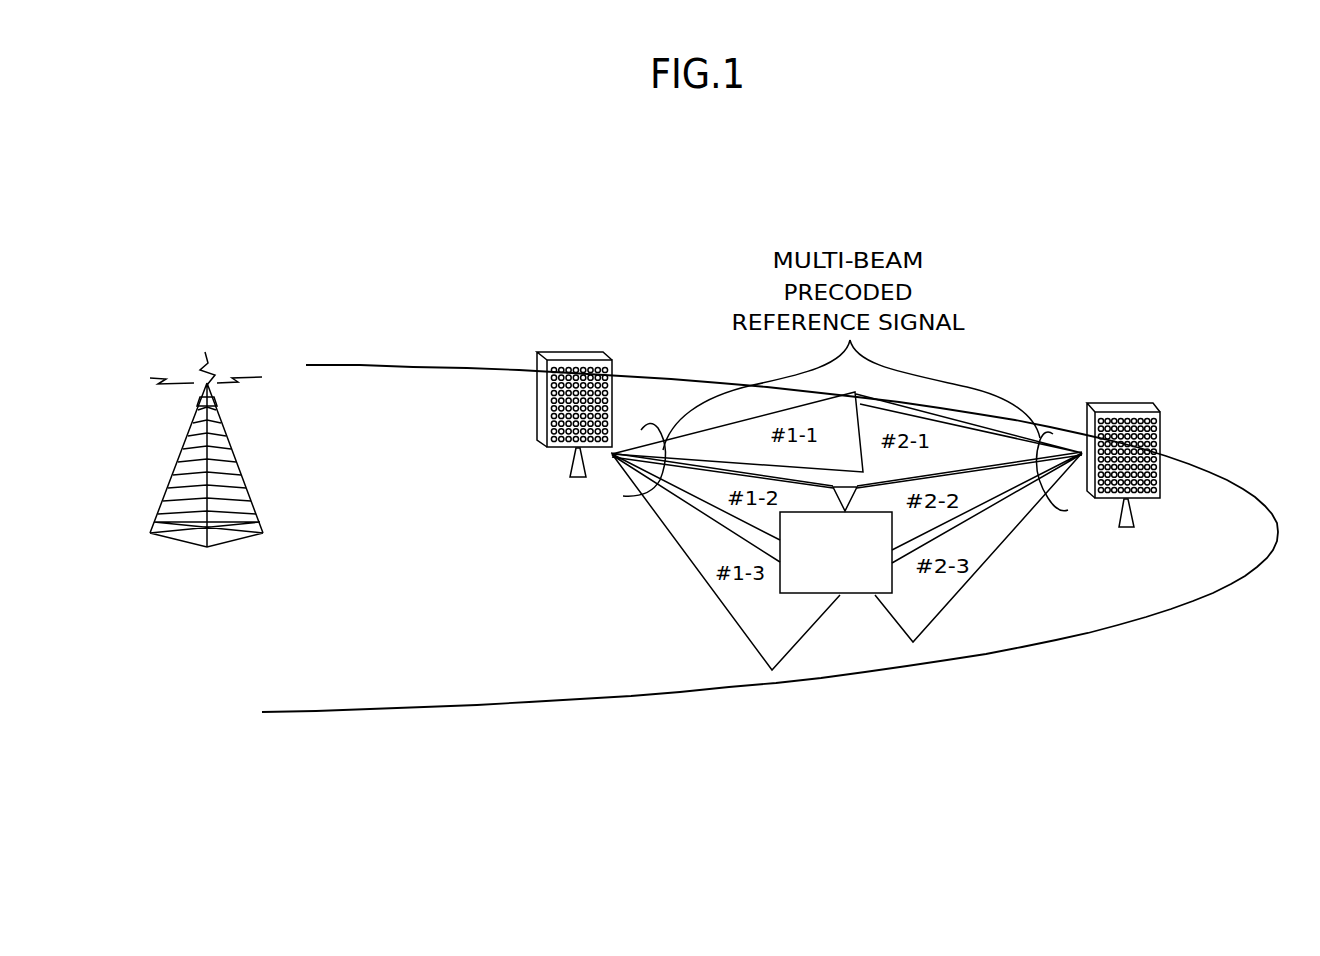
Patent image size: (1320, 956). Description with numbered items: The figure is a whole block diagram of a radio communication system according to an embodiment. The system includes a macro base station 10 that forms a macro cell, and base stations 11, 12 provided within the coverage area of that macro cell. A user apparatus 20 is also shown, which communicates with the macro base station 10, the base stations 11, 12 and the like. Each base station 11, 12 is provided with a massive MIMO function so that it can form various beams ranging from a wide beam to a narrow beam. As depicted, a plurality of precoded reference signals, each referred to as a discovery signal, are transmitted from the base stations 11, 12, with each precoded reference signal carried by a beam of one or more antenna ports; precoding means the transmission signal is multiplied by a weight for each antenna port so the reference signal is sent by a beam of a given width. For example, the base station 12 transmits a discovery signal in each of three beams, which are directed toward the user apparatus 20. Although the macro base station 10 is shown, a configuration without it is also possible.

The macro base station 10 is at (197, 547).
The base station 11 is at (573, 351).
The base station 12 is at (1123, 403).
The user apparatus 20 is at (838, 594).